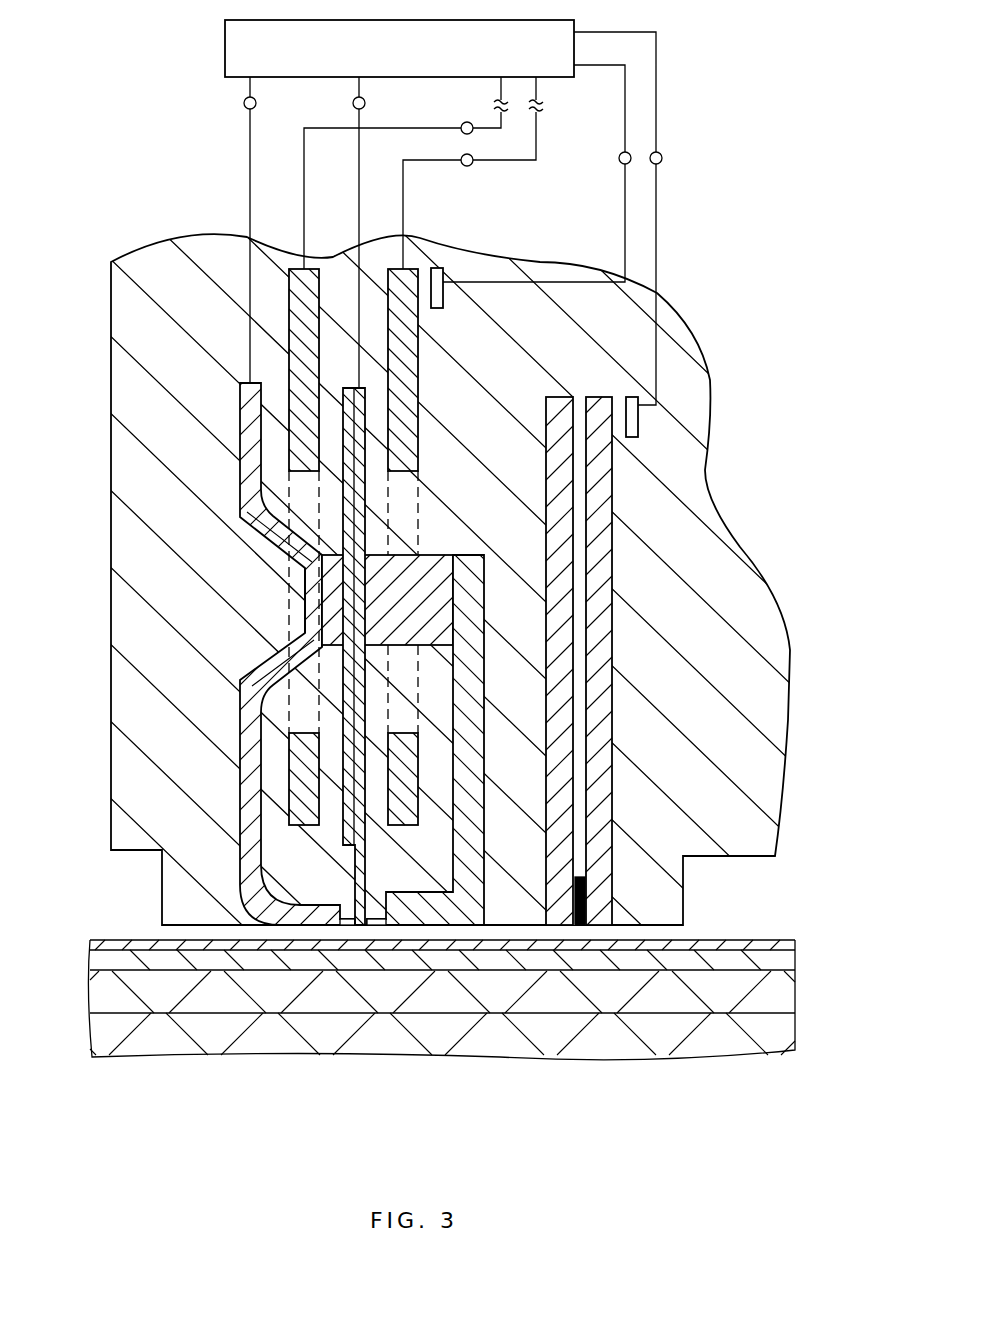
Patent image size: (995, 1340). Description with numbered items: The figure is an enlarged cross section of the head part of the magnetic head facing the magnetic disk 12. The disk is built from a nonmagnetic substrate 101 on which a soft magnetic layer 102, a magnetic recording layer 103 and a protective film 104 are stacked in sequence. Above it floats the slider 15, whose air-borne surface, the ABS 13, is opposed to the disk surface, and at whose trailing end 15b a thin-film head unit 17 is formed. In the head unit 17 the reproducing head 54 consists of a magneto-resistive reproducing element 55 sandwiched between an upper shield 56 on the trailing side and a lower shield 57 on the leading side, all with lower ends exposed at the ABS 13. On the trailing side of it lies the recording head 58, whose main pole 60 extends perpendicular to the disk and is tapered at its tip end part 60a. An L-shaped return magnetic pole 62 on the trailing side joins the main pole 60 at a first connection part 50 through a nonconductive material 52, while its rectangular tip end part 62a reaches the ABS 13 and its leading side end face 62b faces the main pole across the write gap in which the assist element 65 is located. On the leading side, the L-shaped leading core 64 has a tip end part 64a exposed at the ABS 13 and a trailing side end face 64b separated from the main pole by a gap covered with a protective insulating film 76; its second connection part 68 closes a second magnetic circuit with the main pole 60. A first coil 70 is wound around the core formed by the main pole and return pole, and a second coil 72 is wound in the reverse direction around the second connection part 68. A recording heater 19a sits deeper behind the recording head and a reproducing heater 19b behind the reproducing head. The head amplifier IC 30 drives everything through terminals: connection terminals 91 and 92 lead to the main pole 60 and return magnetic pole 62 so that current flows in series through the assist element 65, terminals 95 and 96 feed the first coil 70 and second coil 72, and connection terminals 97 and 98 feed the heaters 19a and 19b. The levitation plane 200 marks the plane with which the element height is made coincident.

The magnetic disk 12 is at (406, 1033).
The ABS 13 is at (735, 857).
The slider 15 is at (700, 378).
The trailing end 15b is at (110, 488).
The head unit 17 is at (590, 262).
The recording heater 19a is at (446, 298).
The reproducing heater 19b is at (634, 440).
The head amplifier IC 30 is at (225, 50).
The first connection part 50 is at (313, 597).
The nonconductive material 52 is at (335, 578).
The reproducing head 54 is at (604, 633).
The reproducing element 55 is at (584, 893).
The upper shield 56 is at (602, 597).
The lower shield 57 is at (566, 557).
The recording head 58 is at (351, 506).
The main pole 60 is at (357, 827).
The tip end part 60a is at (362, 927).
The return magnetic pole 62 is at (238, 699).
The tip end part 62a is at (280, 927).
The leading side end face 62b is at (345, 913).
The leading core 64 is at (486, 652).
The tip end part 64a is at (447, 927).
The trailing side end face 64b is at (372, 920).
The assist element 65 is at (350, 927).
The second connection part 68 is at (428, 556).
The first coil 70 is at (292, 318).
The second coil 72 is at (412, 368).
The protective insulating film 76 is at (152, 262).
The connection terminal 91 is at (353, 103).
The connection terminal 92 is at (244, 103).
The terminal 95 is at (462, 124).
The terminal 96 is at (472, 166).
The connection terminal 97 is at (619, 158).
The connection terminal 98 is at (662, 158).
The substrate 101 is at (92, 1037).
The soft magnetic layer 102 is at (92, 995).
The magnetic recording layer 103 is at (92, 961).
The protective film 104 is at (92, 940).
The levitation plane 200 is at (512, 905).